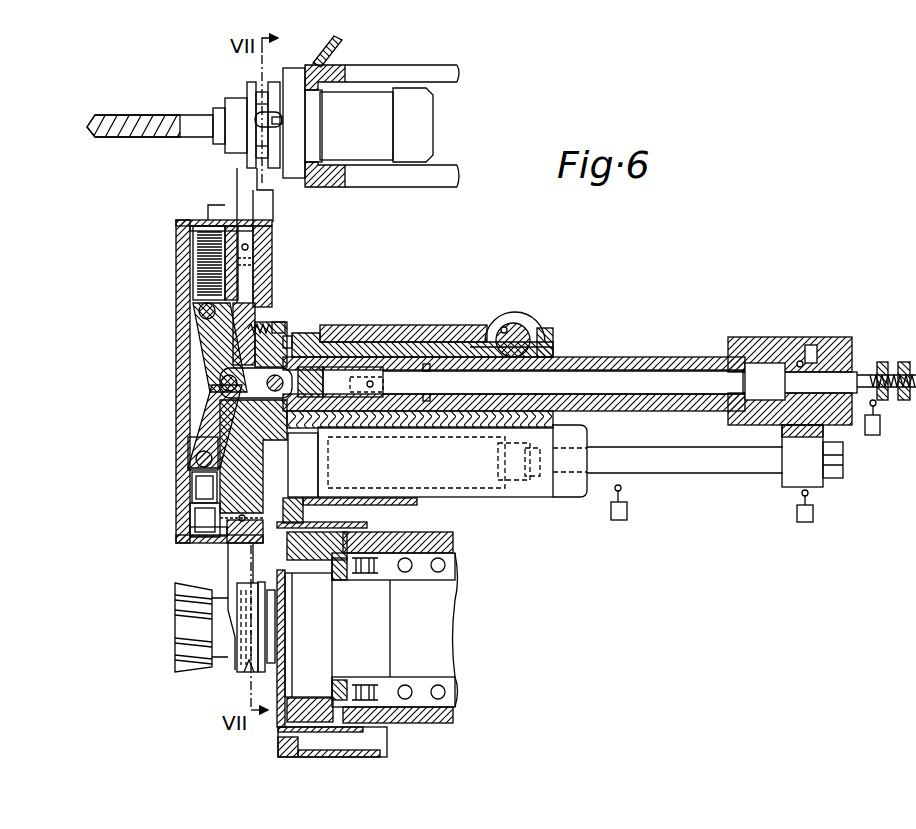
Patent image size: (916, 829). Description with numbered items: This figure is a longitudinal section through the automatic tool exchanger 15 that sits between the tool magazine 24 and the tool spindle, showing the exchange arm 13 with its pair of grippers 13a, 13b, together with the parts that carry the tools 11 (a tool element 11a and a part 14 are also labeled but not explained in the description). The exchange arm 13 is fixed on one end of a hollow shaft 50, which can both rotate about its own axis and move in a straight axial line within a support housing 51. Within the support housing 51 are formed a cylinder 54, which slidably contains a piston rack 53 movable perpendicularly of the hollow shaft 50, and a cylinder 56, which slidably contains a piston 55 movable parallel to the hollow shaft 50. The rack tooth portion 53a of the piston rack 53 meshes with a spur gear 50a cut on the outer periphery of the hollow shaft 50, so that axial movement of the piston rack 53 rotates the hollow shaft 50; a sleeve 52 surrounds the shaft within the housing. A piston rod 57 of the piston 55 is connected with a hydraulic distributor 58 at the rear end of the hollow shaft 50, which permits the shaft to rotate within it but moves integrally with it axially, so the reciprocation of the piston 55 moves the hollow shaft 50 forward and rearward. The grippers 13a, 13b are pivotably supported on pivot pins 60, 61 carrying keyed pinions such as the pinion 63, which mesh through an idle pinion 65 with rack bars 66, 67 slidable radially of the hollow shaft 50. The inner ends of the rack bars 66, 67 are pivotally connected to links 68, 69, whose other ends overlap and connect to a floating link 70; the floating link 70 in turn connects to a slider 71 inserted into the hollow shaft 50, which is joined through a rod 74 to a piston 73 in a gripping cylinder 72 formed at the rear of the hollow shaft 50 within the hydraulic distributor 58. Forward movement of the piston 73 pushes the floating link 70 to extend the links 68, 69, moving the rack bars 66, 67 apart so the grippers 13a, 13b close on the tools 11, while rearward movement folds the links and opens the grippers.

The tool 11 is at (275, 92).
The spindle key 11a is at (281, 119).
The exchange arm 13 is at (175, 219).
The gripper 13a is at (277, 191).
The gripper 13b is at (218, 568).
The spindle sleeve 14 is at (281, 127).
The automatic tool exchanger 15 is at (599, 387).
The tool magazine 24 is at (318, 62).
The hollow shaft 50 is at (407, 360).
The spur gear 50a is at (660, 365).
The support housing 51 is at (440, 333).
The sleeve 52 is at (375, 350).
The piston rack 53 is at (522, 338).
The rack tooth portion 53a is at (548, 340).
The cylinder 54 is at (503, 328).
The piston 55 is at (513, 467).
The cylinder 56 is at (467, 477).
The piston rod 57 is at (703, 466).
The hydraulic distributor 58 is at (850, 340).
The pivot pin 60 is at (182, 238).
The pivot pin 61 is at (190, 517).
The pinion 63 is at (198, 524).
The idle pinion 65 is at (195, 487).
The rack bar 66 is at (192, 259).
The rack bar 67 is at (190, 463).
The link 68 is at (197, 335).
The link 69 is at (200, 418).
The floating link 70 is at (243, 368).
The slider 71 is at (338, 375).
The gripping cylinder 72 is at (812, 340).
The piston 73 is at (765, 340).
The rod 74 is at (600, 378).